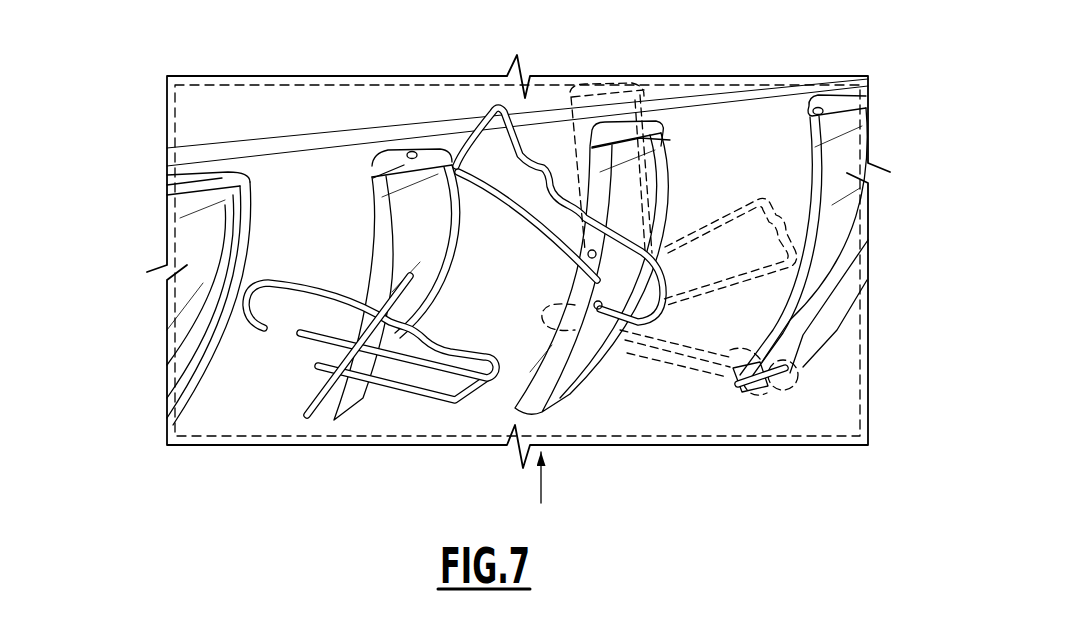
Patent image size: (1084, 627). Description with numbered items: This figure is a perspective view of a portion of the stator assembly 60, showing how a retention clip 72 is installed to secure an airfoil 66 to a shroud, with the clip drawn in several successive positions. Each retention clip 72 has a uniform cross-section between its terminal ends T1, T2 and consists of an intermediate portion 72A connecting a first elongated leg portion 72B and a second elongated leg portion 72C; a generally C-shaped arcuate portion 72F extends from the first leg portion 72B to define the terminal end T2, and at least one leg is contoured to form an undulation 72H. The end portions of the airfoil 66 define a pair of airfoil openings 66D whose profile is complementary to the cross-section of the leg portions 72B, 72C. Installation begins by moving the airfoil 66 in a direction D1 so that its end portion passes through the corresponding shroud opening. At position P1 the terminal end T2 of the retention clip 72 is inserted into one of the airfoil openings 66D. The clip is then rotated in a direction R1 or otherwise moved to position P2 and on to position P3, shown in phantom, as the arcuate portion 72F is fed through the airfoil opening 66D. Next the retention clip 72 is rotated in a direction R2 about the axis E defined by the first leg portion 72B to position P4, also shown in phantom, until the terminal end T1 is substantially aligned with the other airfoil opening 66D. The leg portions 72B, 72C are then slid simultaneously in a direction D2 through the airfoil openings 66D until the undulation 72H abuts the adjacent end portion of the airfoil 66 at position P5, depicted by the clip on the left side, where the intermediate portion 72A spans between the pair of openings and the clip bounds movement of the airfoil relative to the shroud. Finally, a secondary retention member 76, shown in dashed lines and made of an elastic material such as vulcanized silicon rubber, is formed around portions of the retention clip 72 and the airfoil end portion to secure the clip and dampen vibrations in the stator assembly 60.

The stator assembly 60 is at (125, 81).
The secondary retention member 76 is at (247, 84).
The airfoil 66 is at (333, 420).
The airfoil opening 66D is at (804, 327).
The retention clip 72 is at (366, 349).
The intermediate portion 72A is at (480, 395).
The first elongated leg portion 72B is at (341, 300).
The second elongated leg portion 72C is at (303, 413).
The arcuate portion 72F is at (260, 278).
The undulation 72H is at (433, 333).
The terminal end T1 is at (291, 337).
The terminal end T2 is at (269, 340).
The position P1 is at (520, 133).
The position P2 is at (618, 87).
The position P3 is at (786, 214).
The position P4 is at (806, 379).
The position P5 is at (244, 326).
The direction R1 is at (706, 202).
The direction R2 is at (704, 336).
The direction D1 is at (541, 486).
The direction D2 is at (670, 384).
The axis E is at (812, 401).